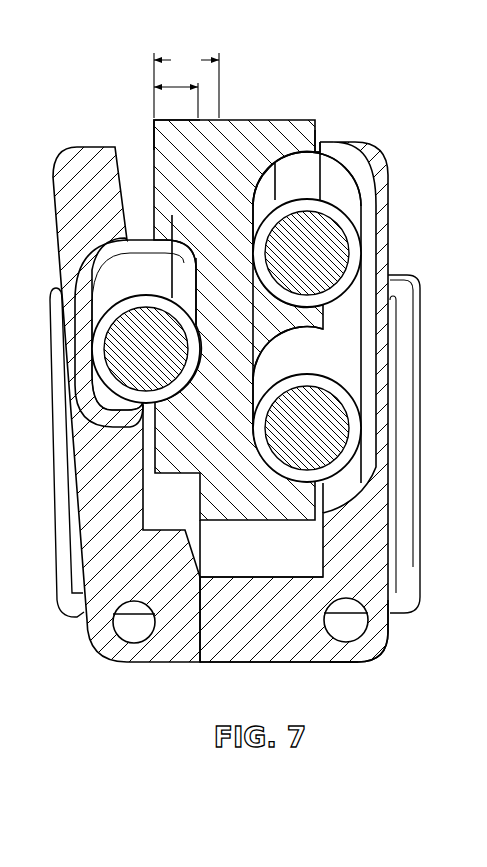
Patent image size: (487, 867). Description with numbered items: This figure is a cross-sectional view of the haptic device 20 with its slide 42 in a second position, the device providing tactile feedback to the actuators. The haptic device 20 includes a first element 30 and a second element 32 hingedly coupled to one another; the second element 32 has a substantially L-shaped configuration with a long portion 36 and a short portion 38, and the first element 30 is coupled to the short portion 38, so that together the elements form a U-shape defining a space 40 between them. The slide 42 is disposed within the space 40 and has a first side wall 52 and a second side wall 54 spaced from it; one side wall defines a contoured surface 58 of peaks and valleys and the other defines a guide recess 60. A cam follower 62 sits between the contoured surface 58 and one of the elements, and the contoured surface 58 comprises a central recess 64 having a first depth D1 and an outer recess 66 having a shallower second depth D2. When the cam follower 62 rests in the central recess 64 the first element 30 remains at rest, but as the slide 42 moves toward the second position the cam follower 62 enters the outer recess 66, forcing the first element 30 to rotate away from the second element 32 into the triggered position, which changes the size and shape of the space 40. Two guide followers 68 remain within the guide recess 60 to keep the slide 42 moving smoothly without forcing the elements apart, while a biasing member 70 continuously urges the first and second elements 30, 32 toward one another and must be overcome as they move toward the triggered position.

The haptic device 20 is at (365, 74).
The first element 30 is at (78, 153).
The second element 32 is at (370, 640).
The long portion 36 is at (376, 172).
The short portion 38 is at (287, 658).
The space 40 is at (262, 568).
The slide 42 is at (258, 126).
The first side wall 52 is at (155, 140).
The second side wall 54 is at (315, 132).
The contoured surface 58 is at (190, 284).
The guide recess 60 is at (286, 168).
The cam follower 62 is at (115, 383).
The central recess 64 is at (207, 305).
The outer recess 66 is at (125, 242).
The guide follower 68 is at (355, 254).
The biasing member 70 is at (408, 572).
The first depth D1 is at (186, 85).
The second depth D2 is at (178, 90).